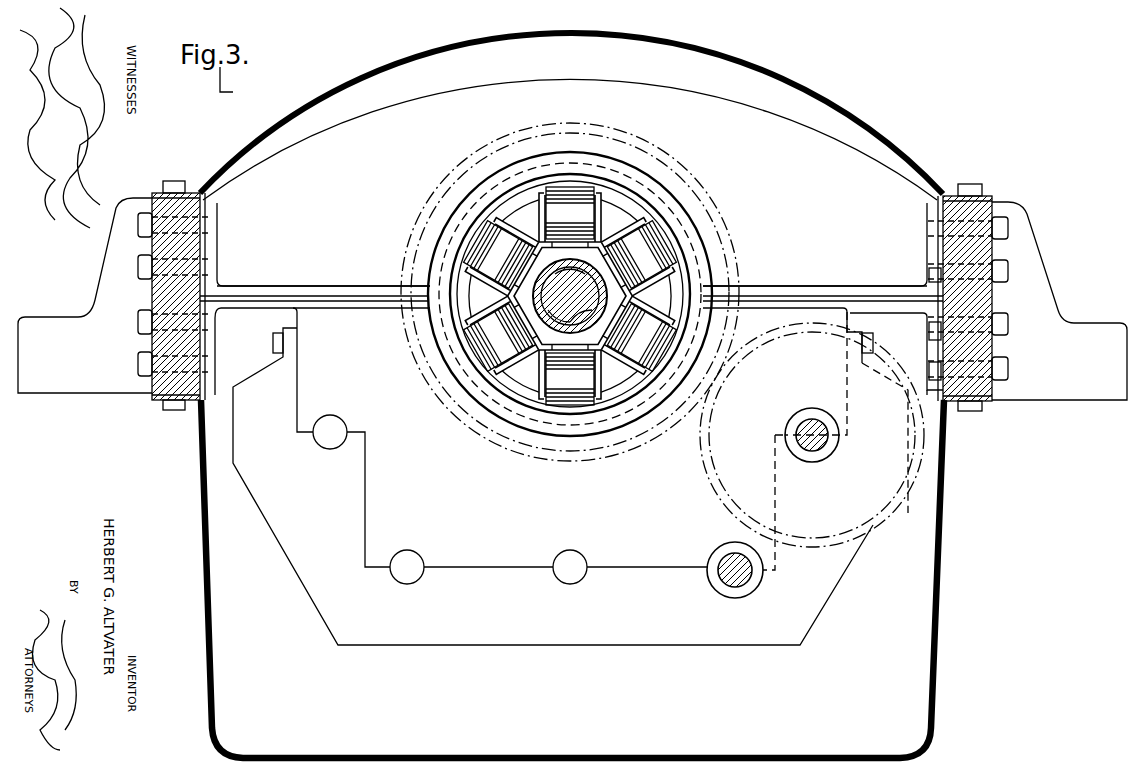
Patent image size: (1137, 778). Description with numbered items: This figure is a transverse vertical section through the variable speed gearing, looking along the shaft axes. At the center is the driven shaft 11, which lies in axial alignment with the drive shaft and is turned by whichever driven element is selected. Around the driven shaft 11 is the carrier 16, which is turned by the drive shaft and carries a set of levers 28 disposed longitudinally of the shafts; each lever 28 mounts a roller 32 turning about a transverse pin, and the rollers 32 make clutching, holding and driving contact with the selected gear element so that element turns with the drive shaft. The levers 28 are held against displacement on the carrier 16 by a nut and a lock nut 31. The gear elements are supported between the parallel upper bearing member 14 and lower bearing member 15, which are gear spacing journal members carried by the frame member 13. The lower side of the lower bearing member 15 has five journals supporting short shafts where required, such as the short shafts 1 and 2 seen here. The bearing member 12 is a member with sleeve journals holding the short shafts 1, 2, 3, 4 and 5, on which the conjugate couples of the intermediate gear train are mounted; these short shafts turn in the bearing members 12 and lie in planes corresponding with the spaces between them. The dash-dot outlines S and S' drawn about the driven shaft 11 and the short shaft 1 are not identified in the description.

The short shaft 1 is at (820, 445).
The short shaft 2 is at (740, 580).
The short shaft 3 is at (585, 578).
The short shaft 4 is at (420, 578).
The short shaft 5 is at (331, 448).
The driven shaft 11 is at (612, 295).
The bearing member 12 is at (519, 653).
The frame member 13 is at (108, 394).
The upper bearing member 14 is at (280, 285).
The lower bearing member 15 is at (323, 300).
The carrier 16 is at (604, 351).
The lever 28 is at (643, 226).
The lock nut 31 is at (592, 252).
The roller 32 is at (697, 237).
The pulley S is at (570, 308).
The pulley S' is at (812, 440).